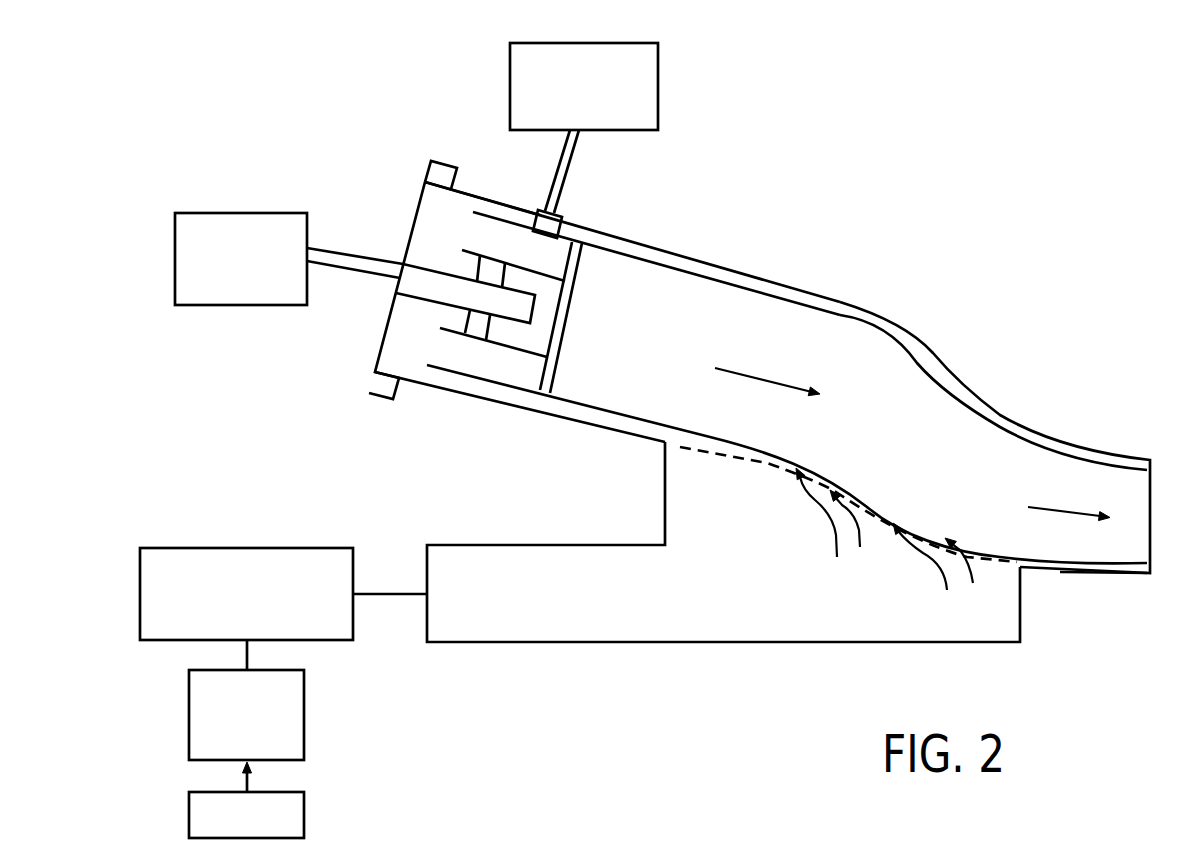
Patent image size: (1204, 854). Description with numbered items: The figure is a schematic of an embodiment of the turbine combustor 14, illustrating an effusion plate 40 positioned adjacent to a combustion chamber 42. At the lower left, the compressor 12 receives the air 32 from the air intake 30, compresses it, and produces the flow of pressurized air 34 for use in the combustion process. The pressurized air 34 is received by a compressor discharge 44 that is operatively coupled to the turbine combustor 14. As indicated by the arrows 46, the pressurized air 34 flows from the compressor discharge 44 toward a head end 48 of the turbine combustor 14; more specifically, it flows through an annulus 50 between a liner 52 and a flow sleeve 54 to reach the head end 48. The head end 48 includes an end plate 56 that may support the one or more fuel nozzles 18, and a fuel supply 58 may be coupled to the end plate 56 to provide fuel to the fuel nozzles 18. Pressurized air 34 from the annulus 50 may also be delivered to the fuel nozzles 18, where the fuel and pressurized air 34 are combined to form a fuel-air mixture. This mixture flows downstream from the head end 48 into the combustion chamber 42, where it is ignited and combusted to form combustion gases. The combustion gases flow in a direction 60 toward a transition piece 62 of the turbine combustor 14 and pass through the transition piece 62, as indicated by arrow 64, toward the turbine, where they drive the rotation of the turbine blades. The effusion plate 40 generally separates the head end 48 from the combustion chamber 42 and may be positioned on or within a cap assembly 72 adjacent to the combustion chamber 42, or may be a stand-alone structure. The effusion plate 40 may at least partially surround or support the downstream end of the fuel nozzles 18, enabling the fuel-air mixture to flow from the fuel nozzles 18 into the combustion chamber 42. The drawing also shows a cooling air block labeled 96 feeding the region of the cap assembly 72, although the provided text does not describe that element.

The compressor 12 is at (247, 548).
The turbine combustor 14 is at (942, 183).
The fuel nozzles 18 is at (442, 287).
The air intake 30 is at (189, 717).
The air 32 is at (189, 812).
The pressurized air 34 is at (393, 592).
The effusion plate 40 is at (562, 313).
The combustion chamber 42 is at (663, 380).
The compressor discharge 44 is at (722, 643).
The arrows 46 is at (848, 542).
The head end 48 is at (483, 181).
The annulus 50 is at (977, 403).
The liner 52 is at (763, 292).
The flow sleeve 54 is at (735, 258).
The end plate 56 is at (417, 213).
The fuel supply 58 is at (240, 212).
The direction 60 is at (763, 383).
The transition piece 62 is at (943, 397).
The arrow 64 is at (1058, 507).
The cap assembly 72 is at (583, 258).
The cooling air supply 96 is at (660, 82).